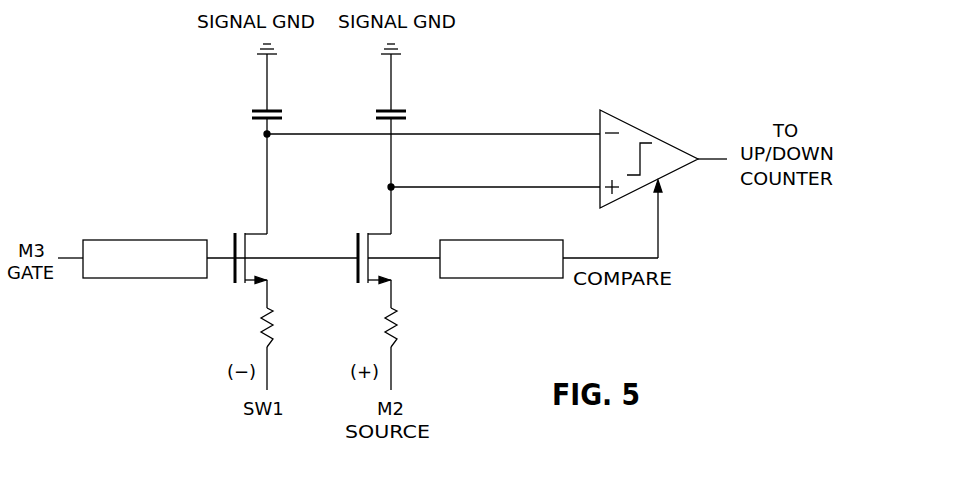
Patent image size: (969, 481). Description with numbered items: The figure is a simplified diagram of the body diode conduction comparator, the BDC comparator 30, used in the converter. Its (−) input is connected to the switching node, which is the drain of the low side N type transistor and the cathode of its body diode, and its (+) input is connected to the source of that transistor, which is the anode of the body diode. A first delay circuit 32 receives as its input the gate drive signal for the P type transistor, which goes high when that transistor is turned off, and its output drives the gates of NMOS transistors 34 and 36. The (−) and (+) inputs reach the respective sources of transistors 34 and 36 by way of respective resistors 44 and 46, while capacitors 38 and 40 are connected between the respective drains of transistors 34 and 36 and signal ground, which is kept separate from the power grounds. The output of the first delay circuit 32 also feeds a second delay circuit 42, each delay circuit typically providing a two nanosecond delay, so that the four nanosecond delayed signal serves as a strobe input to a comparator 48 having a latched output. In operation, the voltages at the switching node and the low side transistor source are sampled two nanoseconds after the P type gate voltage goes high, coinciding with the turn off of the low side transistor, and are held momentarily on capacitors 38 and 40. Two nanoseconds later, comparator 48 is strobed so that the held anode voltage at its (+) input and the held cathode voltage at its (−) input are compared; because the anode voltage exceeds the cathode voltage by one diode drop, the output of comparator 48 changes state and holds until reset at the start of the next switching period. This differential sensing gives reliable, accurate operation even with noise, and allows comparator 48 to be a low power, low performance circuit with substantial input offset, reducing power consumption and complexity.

The BDC comparator 30 is at (158, 138).
The first delay circuit 32 is at (145, 239).
The NMOS transistor 34 is at (250, 232).
The NMOS transistor 36 is at (372, 233).
The capacitor 38 is at (268, 108).
The capacitor 40 is at (392, 108).
The second delay circuit 42 is at (495, 239).
The resistor 44 is at (274, 325).
The resistor 46 is at (398, 325).
The comparator 48 is at (679, 148).